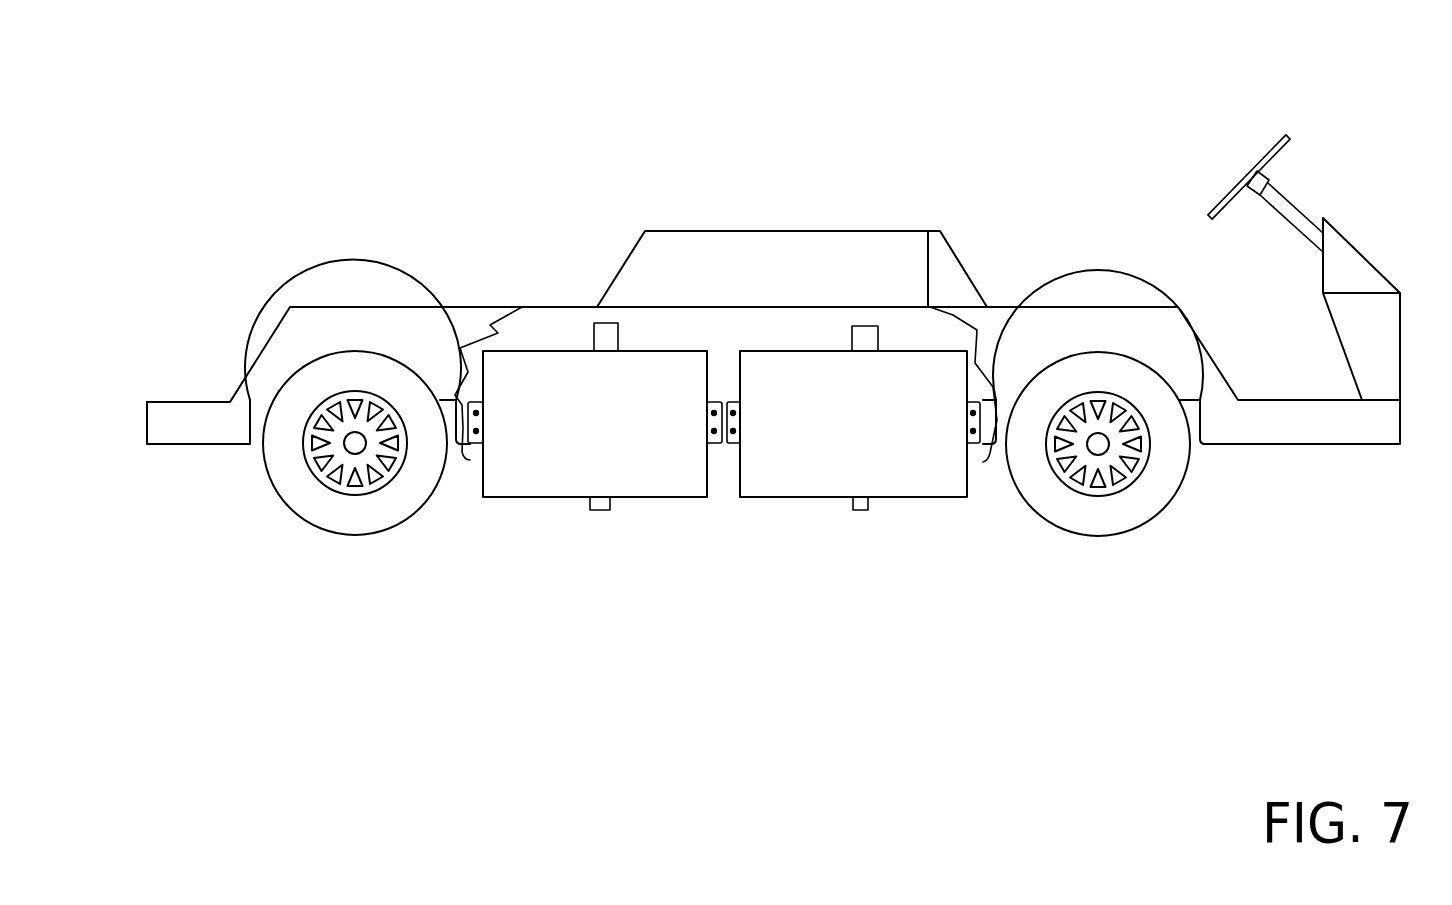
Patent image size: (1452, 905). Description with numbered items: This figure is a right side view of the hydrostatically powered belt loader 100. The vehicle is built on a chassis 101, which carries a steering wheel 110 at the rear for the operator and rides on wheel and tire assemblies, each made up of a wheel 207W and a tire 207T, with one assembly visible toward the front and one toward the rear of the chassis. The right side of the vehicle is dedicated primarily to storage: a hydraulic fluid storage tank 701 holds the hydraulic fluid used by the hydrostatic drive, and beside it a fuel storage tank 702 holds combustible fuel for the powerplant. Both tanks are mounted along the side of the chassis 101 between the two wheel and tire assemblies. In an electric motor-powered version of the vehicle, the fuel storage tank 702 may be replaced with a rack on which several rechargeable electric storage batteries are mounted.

The hydrostatically powered belt loader 100 is at (776, 307).
The chassis 101 is at (1293, 427).
The steering wheel 110 is at (1285, 133).
The wheel 207W is at (330, 467).
The tire 207T is at (342, 518).
The hydraulic fluid storage tank 701 is at (574, 471).
The fuel storage tank 702 is at (882, 463).